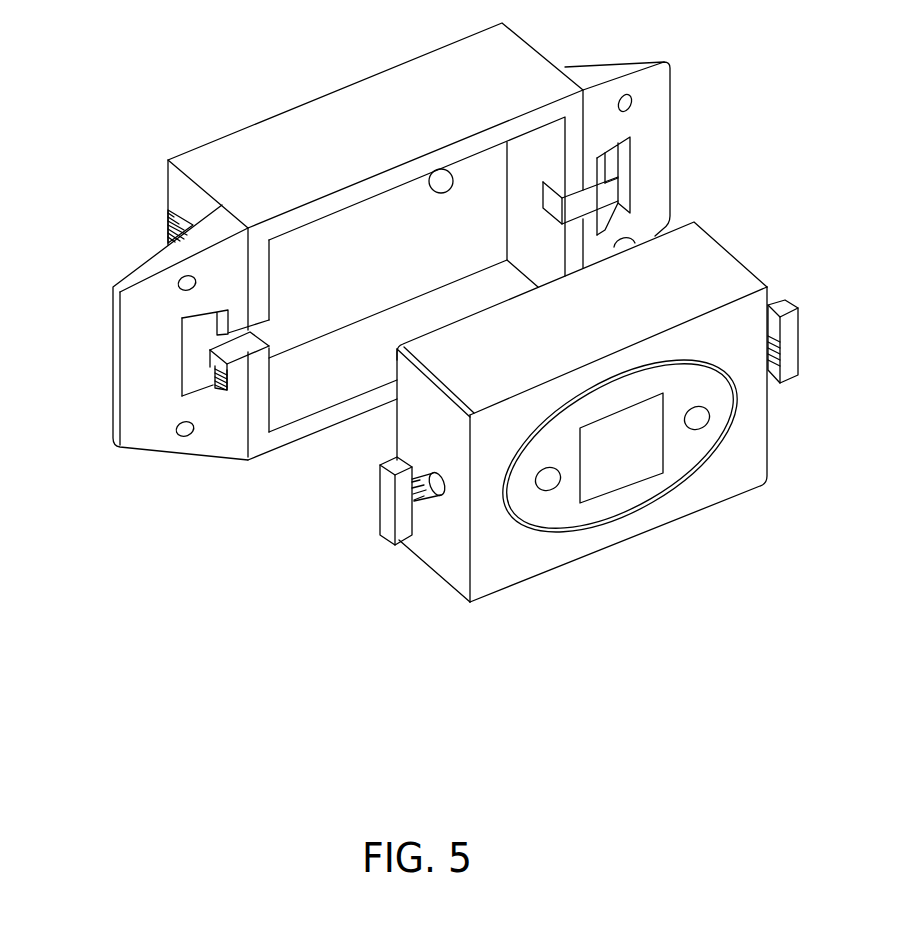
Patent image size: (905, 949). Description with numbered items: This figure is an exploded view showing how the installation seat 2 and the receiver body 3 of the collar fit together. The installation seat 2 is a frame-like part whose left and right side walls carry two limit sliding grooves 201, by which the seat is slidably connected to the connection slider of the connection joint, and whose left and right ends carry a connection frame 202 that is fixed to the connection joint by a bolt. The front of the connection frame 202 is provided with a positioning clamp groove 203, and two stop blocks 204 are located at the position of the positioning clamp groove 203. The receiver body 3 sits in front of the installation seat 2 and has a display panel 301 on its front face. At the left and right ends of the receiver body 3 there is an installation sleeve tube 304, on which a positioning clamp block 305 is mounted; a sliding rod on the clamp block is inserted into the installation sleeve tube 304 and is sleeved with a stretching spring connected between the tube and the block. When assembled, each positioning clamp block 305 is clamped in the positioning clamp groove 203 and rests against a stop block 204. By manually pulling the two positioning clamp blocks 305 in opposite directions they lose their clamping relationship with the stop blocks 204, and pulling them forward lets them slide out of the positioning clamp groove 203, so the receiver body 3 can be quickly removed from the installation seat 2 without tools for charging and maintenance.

The installation seat 2 is at (250, 150).
The limit sliding groove 201 is at (193, 223).
The connection frame 202 is at (157, 285).
The positioning clamp groove 203 is at (193, 350).
The stop block 204 is at (218, 380).
The receiver body 3 is at (677, 277).
The display panel 301 is at (640, 460).
The installation sleeve tube 304 is at (438, 486).
The positioning clamp block 305 is at (388, 503).